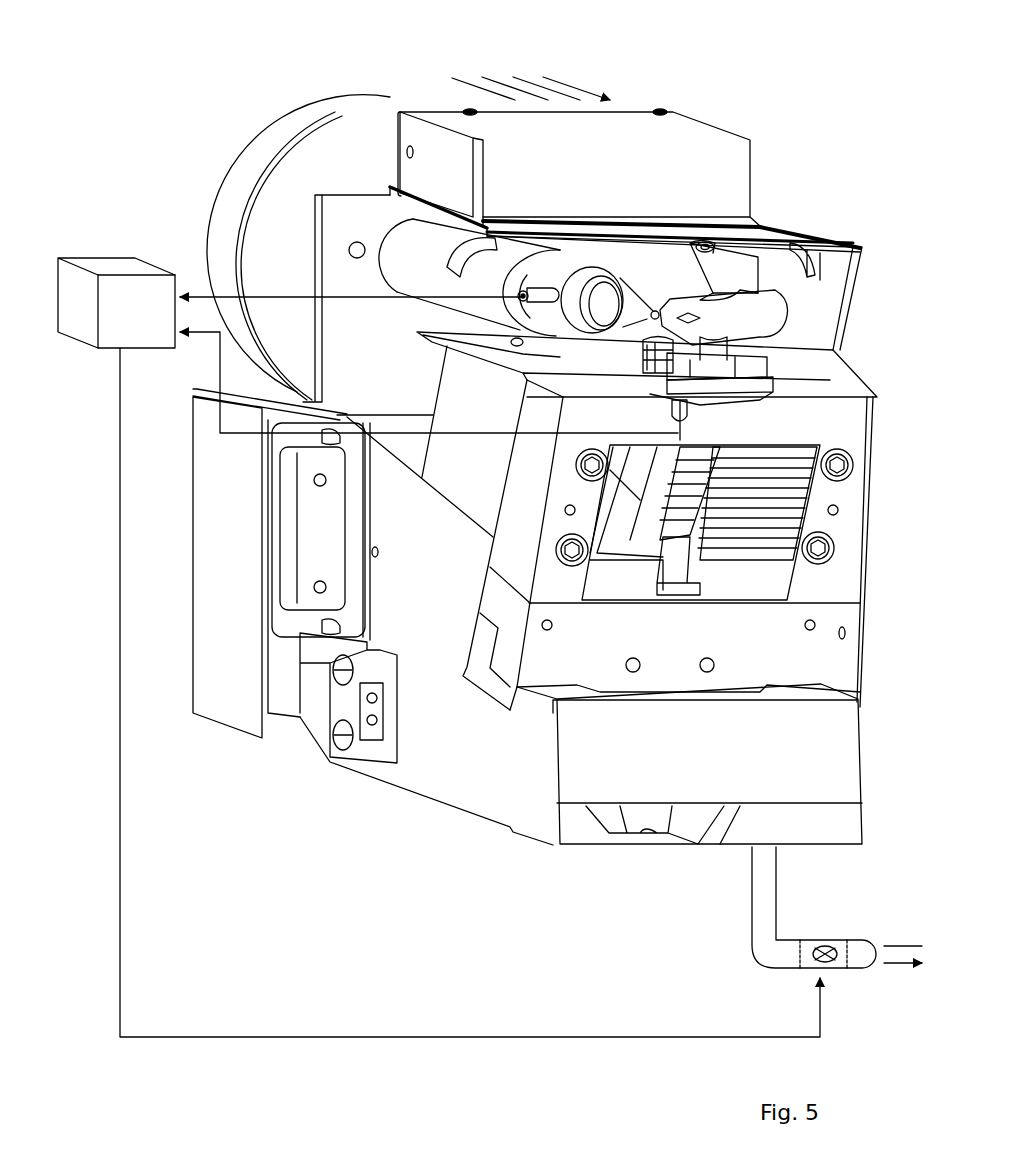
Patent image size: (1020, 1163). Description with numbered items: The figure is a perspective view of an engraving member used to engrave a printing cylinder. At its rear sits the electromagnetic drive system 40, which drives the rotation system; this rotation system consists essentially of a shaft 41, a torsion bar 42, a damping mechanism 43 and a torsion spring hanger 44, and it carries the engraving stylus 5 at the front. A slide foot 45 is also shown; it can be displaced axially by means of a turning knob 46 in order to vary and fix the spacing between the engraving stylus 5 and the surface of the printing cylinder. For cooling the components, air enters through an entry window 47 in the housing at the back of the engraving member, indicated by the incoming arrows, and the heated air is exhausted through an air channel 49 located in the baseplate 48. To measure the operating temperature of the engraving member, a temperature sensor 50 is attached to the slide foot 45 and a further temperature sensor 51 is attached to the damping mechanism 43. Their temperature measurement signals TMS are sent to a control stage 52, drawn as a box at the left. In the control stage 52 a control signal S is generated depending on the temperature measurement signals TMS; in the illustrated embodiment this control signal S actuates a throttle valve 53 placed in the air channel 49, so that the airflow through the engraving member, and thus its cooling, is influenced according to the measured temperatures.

The engraving stylus 5 is at (765, 308).
The electromagnetic drive system 40 is at (773, 458).
The shaft 41 is at (745, 335).
The torsion bar 42 is at (677, 563).
The damping mechanism 43 is at (780, 393).
The torsion spring hanger 44 is at (757, 370).
The slide foot 45 is at (565, 263).
The turning knob 46 is at (252, 167).
The entry window 47 is at (623, 100).
The baseplate 48 is at (479, 777).
The air channel 49 is at (767, 909).
The temperature sensor 50 is at (520, 292).
The temperature sensor 51 is at (683, 412).
The control stage 52 is at (107, 263).
The throttle valve 53 is at (833, 971).
The control signal S is at (795, 990).
The temperature measurement signals TMS is at (197, 327).